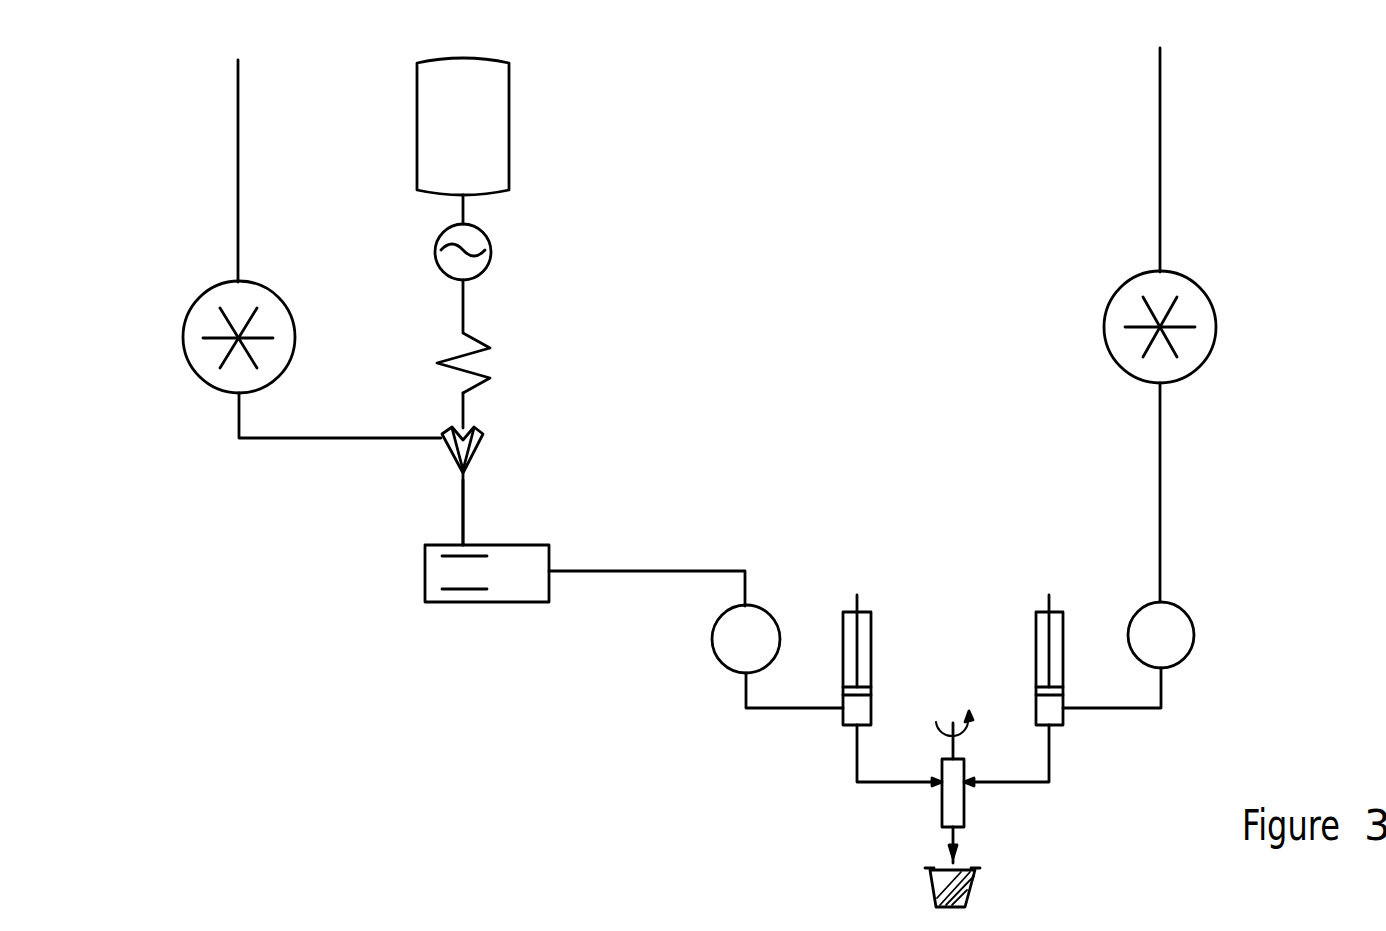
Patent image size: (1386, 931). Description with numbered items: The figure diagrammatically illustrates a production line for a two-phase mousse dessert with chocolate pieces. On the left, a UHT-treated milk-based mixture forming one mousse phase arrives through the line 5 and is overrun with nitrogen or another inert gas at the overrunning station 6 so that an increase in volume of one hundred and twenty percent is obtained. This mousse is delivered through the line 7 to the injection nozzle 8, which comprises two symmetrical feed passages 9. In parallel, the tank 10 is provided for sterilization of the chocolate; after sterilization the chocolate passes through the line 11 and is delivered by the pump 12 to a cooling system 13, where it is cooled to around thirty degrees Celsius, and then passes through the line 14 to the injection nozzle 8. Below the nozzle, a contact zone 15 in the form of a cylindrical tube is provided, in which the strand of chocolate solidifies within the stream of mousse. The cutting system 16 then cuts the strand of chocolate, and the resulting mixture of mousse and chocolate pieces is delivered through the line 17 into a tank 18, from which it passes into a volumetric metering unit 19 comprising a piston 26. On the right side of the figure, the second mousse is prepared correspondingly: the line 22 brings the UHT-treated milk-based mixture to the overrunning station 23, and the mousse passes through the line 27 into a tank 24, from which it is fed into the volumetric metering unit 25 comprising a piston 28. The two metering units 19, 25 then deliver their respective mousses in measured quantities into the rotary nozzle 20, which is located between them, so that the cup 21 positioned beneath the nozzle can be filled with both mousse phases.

The line 5 is at (238, 98).
The overrunning station 6 is at (183, 318).
The line 7 is at (274, 438).
The injection nozzle 8 is at (428, 491).
The symmetrical feed passages 9 is at (448, 458).
The tank 10 is at (509, 118).
The line 11 is at (455, 209).
The pump 12 is at (491, 242).
The cooling system 13 is at (478, 338).
The line 14 is at (463, 407).
The contact zone 15 is at (496, 504).
The cutting system 16 is at (449, 614).
The line 17 is at (658, 567).
The tank 18 is at (718, 665).
The volumetric metering unit 19 is at (871, 635).
The rotary nozzle 20 is at (938, 806).
The cup 21 is at (973, 897).
The line 22 is at (1160, 105).
The overrunning station 23 is at (1216, 325).
The tank 24 is at (1195, 633).
The volumetric metering unit 25 is at (1036, 632).
The piston 26 is at (850, 702).
The line 27 is at (1160, 480).
The piston 28 is at (1048, 693).